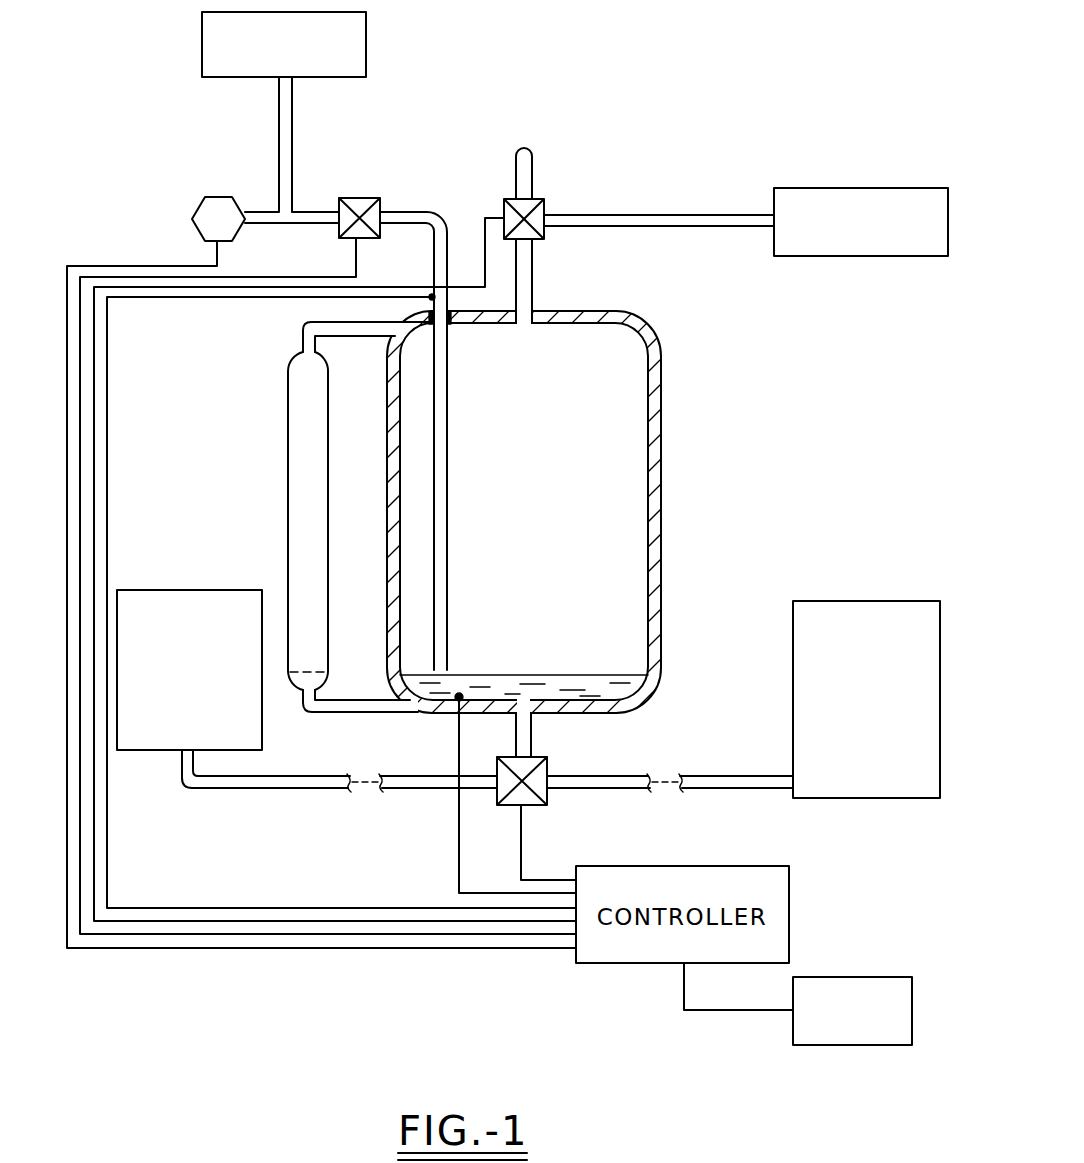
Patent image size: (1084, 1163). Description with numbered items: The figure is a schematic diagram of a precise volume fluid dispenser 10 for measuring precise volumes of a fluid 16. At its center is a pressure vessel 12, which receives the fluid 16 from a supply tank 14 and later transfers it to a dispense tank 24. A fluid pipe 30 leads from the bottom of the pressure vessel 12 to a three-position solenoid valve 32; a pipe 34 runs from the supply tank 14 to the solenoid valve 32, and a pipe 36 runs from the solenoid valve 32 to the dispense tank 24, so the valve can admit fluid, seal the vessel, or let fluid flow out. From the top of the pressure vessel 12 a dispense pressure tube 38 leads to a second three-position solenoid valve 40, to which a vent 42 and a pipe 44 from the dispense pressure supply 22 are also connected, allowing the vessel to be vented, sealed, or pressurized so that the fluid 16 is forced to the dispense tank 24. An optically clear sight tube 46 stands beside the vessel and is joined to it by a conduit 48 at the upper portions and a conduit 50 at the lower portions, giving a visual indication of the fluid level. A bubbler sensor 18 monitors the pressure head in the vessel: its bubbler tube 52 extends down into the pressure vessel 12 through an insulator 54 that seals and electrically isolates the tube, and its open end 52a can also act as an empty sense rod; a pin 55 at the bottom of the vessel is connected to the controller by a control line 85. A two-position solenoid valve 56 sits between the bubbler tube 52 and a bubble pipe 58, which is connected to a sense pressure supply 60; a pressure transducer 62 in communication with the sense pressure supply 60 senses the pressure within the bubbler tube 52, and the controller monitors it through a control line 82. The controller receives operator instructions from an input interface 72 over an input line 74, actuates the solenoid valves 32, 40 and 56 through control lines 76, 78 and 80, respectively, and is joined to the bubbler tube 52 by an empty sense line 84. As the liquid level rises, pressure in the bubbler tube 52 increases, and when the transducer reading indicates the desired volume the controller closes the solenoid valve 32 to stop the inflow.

The precise volume fluid dispenser 10 is at (640, 106).
The pressure vessel 12 is at (664, 444).
The supply tank 14 is at (188, 590).
The fluid 16 is at (540, 675).
The bubbler sensor 18 is at (400, 196).
The dispense pressure supply 22 is at (845, 188).
The dispense tank 24 is at (868, 601).
The fluid pipe 30 is at (531, 733).
The solenoid valve 32 is at (547, 800).
The pipe 34 is at (252, 788).
The pipe 36 is at (740, 790).
The dispense pressure tube 38 is at (532, 272).
The solenoid valve 40 is at (544, 206).
The vent 42 is at (532, 162).
The pipe 44 is at (700, 215).
The sight tube 46 is at (288, 490).
The conduit 48 is at (303, 328).
The conduit 50 is at (356, 714).
The bubbler tube 52 is at (447, 428).
The empty sense rod 52a is at (456, 668).
The insulator 54 is at (448, 325).
The pin 55 is at (461, 693).
The solenoid valve 56 is at (352, 198).
The bubble pipe 58 is at (292, 226).
The sense pressure supply 60 is at (366, 38).
The pressure transducer 62 is at (205, 197).
The input interface 72 is at (852, 1045).
The input line 74 is at (720, 1010).
The control line 76 is at (521, 835).
The control line 78 is at (408, 287).
The control line 80 is at (356, 258).
The control line 82 is at (152, 266).
The empty sense line 84 is at (218, 297).
The control line 85 is at (459, 826).